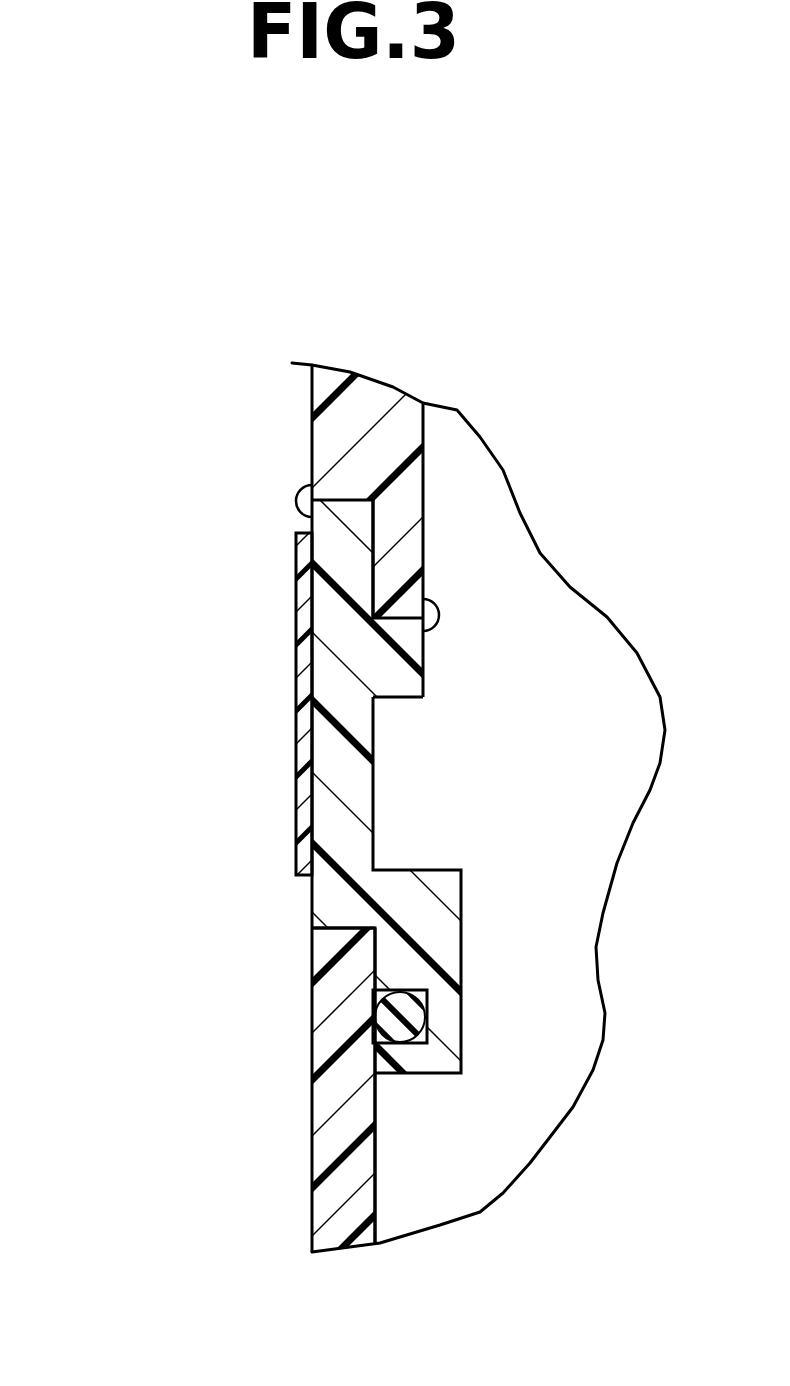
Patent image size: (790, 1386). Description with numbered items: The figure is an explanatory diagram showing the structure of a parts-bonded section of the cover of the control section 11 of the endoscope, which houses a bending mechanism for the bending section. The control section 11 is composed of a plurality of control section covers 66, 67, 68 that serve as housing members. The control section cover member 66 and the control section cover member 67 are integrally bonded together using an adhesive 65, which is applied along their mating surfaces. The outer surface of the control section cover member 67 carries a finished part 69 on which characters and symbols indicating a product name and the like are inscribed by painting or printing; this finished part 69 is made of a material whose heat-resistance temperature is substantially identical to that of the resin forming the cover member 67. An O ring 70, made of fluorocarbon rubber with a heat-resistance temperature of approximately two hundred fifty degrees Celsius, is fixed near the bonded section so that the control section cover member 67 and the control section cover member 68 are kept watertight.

The control section 11 is at (205, 475).
The adhesive 65 is at (395, 560).
The control section cover member 66 is at (385, 425).
The control section cover member 67 is at (333, 885).
The control section cover member 68 is at (332, 1208).
The finished part 69 is at (297, 648).
The O ring 70 is at (427, 1035).